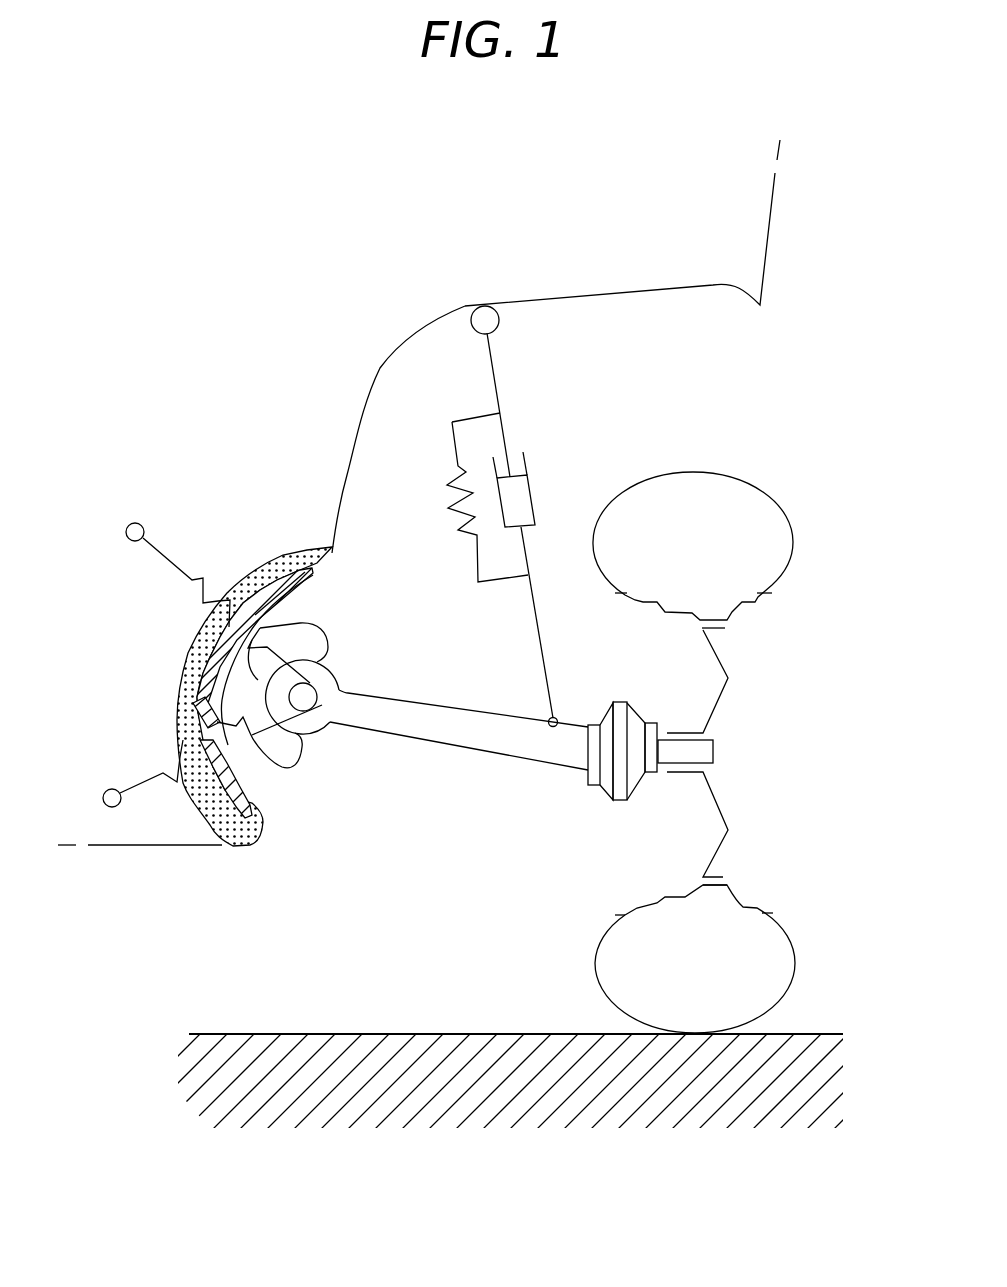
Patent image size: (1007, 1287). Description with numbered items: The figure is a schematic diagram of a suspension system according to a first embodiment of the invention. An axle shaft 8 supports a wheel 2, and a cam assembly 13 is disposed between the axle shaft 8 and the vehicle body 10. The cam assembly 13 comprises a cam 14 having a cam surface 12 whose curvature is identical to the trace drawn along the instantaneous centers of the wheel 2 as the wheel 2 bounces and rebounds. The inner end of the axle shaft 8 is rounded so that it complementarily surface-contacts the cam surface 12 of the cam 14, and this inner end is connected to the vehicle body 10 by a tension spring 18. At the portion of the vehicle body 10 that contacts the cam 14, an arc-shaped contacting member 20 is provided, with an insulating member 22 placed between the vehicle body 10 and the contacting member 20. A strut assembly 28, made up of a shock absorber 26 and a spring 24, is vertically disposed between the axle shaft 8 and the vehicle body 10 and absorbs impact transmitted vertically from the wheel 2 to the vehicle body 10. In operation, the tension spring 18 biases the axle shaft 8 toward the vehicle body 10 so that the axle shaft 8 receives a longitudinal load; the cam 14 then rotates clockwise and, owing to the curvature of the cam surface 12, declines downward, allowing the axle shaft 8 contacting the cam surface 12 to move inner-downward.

The wheel 2 is at (752, 652).
The axle shaft 8 is at (527, 750).
The vehicle body 10 is at (380, 370).
The cam surface 12 is at (300, 623).
The cam assembly 13 is at (230, 688).
The cam 14 is at (318, 643).
The tension spring 18 is at (160, 552).
The arc-shaped contacting member 20 is at (248, 800).
The insulating member 22 is at (213, 828).
The spring 24 is at (447, 484).
The shock absorber 26 is at (535, 484).
The strut assembly 28 is at (525, 403).